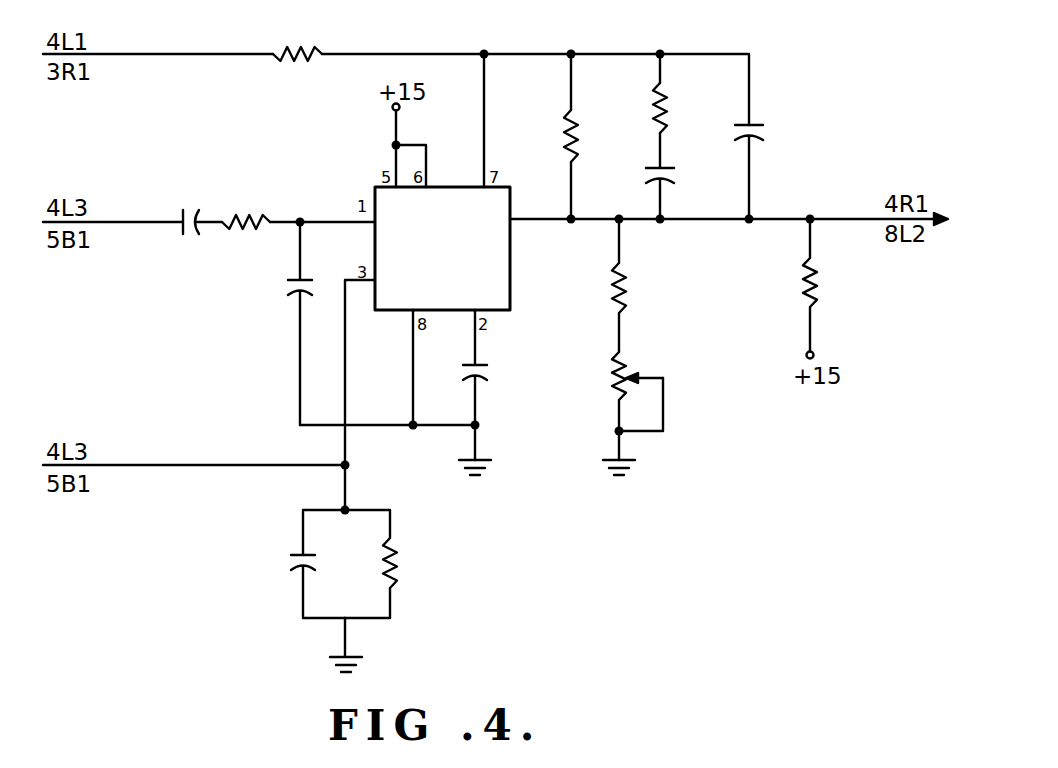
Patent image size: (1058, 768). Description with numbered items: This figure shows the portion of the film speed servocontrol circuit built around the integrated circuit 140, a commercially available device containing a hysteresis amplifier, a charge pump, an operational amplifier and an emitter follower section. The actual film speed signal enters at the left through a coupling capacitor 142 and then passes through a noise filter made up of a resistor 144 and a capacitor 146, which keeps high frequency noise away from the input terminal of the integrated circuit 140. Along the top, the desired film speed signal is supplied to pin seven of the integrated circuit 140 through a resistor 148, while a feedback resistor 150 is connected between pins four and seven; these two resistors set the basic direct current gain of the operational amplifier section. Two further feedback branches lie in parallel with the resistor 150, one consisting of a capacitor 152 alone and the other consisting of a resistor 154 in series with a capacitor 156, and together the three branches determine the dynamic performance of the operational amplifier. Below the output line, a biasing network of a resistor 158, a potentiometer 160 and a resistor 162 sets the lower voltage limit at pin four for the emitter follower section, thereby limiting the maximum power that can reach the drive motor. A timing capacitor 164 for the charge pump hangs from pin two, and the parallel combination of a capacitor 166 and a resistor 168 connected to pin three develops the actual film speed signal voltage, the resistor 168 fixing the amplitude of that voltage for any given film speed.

The integrated circuit 140 is at (462, 266).
The coupling capacitor 142 is at (202, 188).
The resistor 144 is at (256, 212).
The capacitor 146 is at (287, 290).
The resistor 148 is at (292, 47).
The resistor 150 is at (578, 126).
The capacitor 152 is at (768, 130).
The resistor 154 is at (667, 117).
The capacitor 156 is at (675, 180).
The resistor 158 is at (626, 282).
The potentiometer 160 is at (651, 369).
The resistor 162 is at (818, 294).
The timing capacitor 164 is at (490, 374).
The capacitor 166 is at (290, 567).
The resistor 168 is at (397, 550).